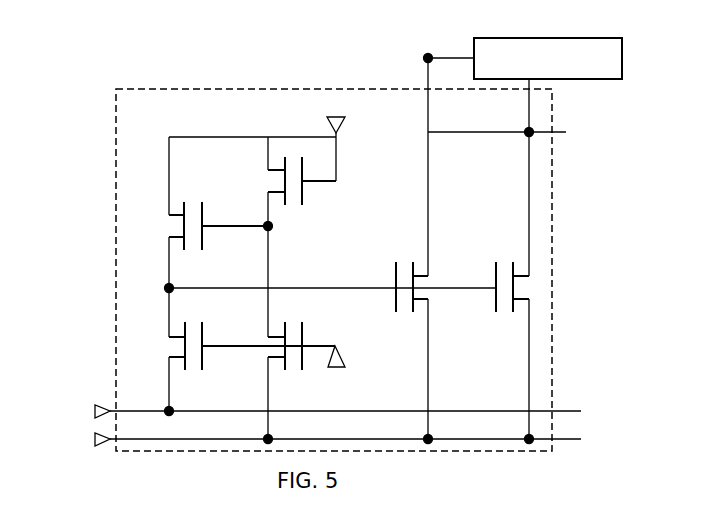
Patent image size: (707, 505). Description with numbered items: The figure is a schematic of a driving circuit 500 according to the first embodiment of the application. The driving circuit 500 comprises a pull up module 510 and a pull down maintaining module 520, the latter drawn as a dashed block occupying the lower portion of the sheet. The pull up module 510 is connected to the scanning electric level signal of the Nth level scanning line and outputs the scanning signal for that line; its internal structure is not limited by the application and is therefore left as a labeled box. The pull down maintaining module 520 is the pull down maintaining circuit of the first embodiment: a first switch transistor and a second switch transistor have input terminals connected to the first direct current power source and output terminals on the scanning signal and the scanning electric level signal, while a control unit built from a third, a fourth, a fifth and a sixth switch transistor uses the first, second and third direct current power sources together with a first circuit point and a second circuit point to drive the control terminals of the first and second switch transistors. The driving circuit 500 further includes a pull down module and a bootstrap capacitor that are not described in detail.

The driving circuit 500 is at (74, 122).
The pull up module 510 is at (530, 37).
The pull down maintaining module 520 is at (113, 292).